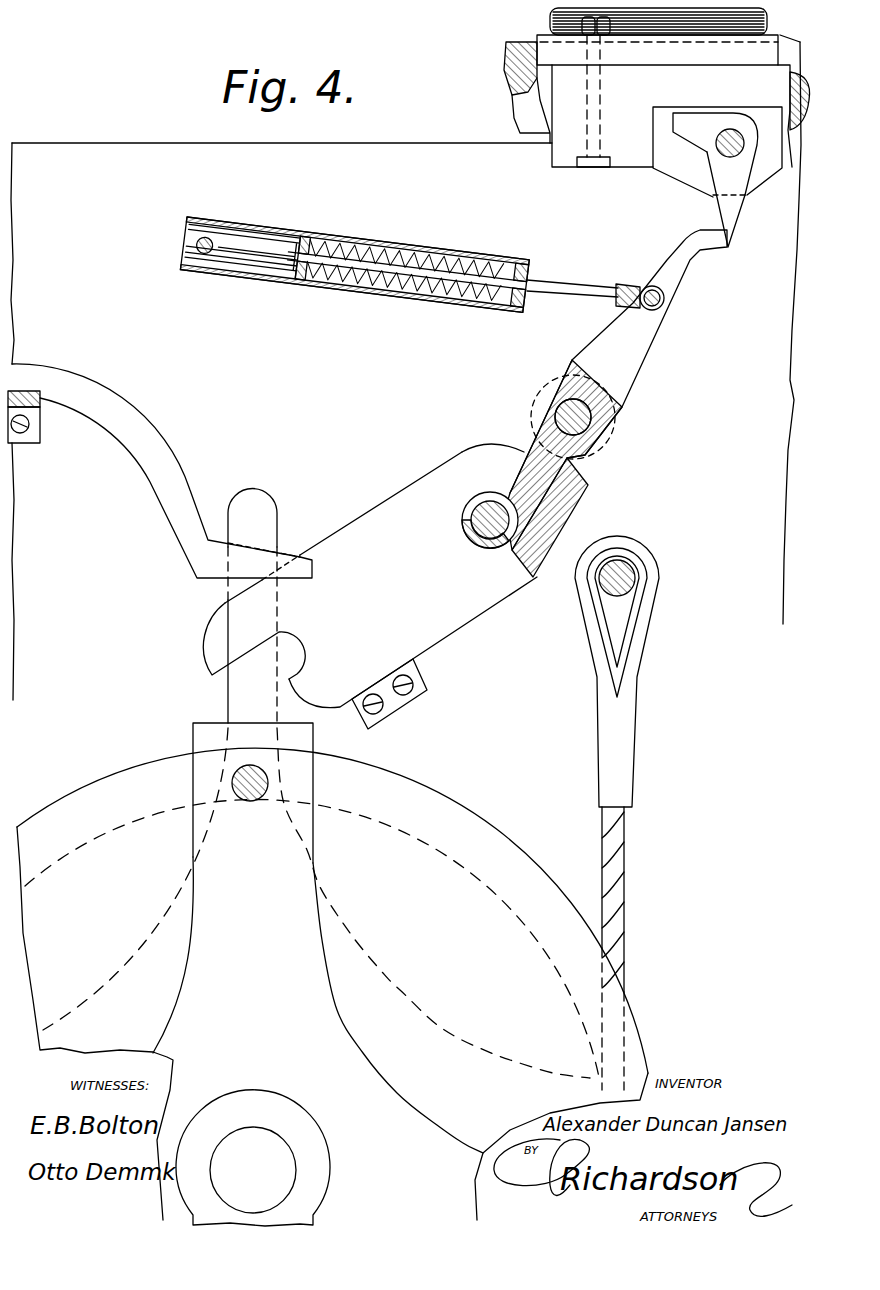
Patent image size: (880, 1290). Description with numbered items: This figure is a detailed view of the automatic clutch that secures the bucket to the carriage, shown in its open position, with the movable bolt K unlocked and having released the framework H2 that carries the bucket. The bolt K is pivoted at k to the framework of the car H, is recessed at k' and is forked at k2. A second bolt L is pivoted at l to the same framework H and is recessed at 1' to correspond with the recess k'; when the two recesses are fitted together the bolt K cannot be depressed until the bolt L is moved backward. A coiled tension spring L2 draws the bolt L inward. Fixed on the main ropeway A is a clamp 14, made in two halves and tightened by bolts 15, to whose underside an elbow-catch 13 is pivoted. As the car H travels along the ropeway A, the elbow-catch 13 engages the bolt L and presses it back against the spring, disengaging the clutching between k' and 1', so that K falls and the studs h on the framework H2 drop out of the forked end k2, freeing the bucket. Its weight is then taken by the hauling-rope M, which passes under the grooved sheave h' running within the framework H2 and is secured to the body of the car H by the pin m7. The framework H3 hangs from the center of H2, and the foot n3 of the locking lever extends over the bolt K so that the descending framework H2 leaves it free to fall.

The car H is at (406, 367).
The clamp 14 is at (657, 87).
The bolts 15 is at (600, 28).
The main ropeway A is at (760, 198).
The elbow-catch 13 is at (716, 218).
The tension spring L2 is at (463, 262).
The bolt L is at (637, 363).
The pivot l is at (540, 396).
The recess k' is at (567, 517).
The pivot k is at (473, 522).
The movable bolt K is at (397, 498).
The recess 1' is at (493, 430).
The forked end k2 is at (204, 650).
The foot n3 is at (160, 463).
The pin m7 is at (650, 578).
The hauling-rope M is at (625, 917).
The grooved sheave h' is at (332, 984).
The framework H2 is at (197, 986).
The studs h is at (284, 783).
The framework H3 is at (315, 1176).